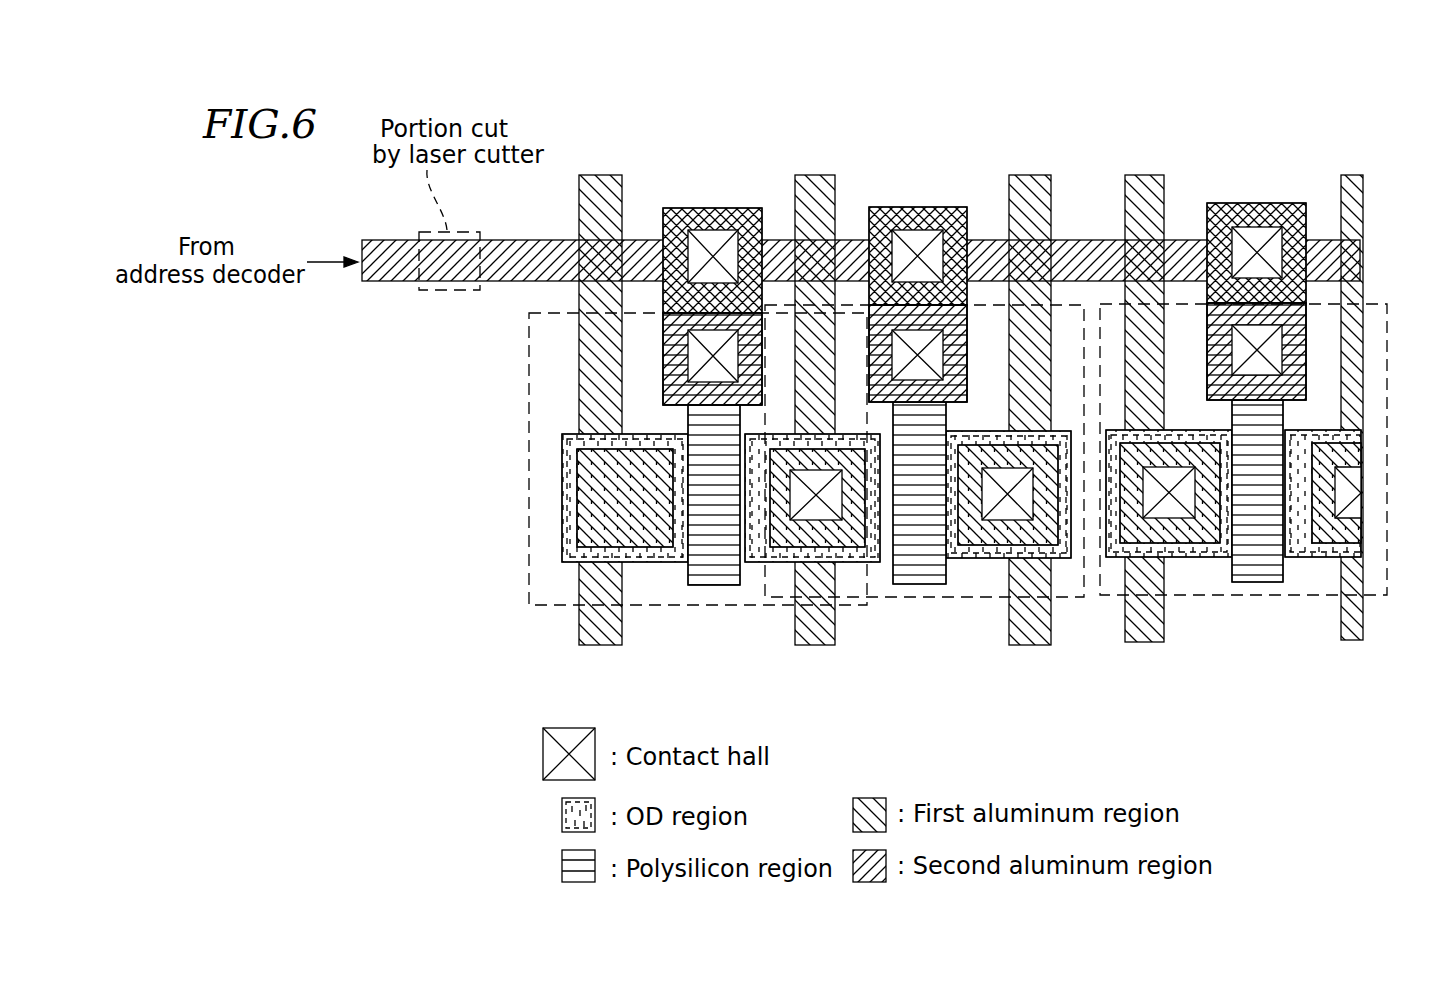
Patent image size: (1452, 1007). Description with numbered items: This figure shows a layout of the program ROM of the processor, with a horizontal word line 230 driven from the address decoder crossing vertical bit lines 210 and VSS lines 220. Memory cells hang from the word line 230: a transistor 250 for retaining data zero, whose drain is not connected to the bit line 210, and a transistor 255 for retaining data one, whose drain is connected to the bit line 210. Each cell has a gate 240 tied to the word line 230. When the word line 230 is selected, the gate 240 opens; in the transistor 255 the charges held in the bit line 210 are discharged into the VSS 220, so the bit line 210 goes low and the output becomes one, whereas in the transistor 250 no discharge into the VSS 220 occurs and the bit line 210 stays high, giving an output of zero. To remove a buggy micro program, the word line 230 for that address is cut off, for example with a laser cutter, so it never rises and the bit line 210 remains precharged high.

The bit line 210 is at (608, 177).
The VSS 220 is at (822, 178).
The word line 230 is at (388, 281).
The gate 240 is at (713, 593).
The transistor for retaining data 0 250 is at (530, 472).
The transistor for retaining data 1 255 is at (1108, 600).